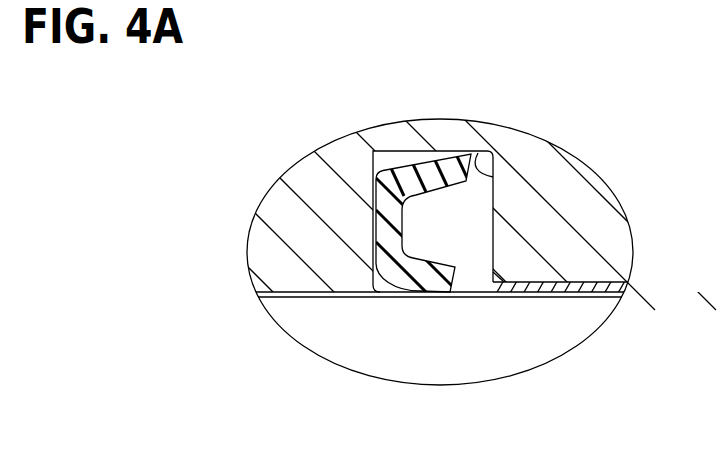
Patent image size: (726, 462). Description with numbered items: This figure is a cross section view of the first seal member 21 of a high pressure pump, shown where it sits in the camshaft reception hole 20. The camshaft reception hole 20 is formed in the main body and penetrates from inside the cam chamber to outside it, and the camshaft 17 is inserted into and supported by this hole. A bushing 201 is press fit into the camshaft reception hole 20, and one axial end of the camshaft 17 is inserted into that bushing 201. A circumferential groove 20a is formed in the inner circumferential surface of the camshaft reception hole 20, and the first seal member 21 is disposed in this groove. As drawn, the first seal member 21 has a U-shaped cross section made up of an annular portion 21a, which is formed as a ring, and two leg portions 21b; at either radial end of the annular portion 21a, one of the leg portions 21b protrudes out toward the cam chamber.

The camshaft 17 is at (367, 327).
The camshaft reception hole 20 is at (538, 283).
The circumferential groove 20a is at (495, 177).
The bushing 201 is at (588, 291).
The first seal member 21 is at (368, 251).
The annular portion 21a is at (386, 203).
The leg portions 21b is at (440, 167).